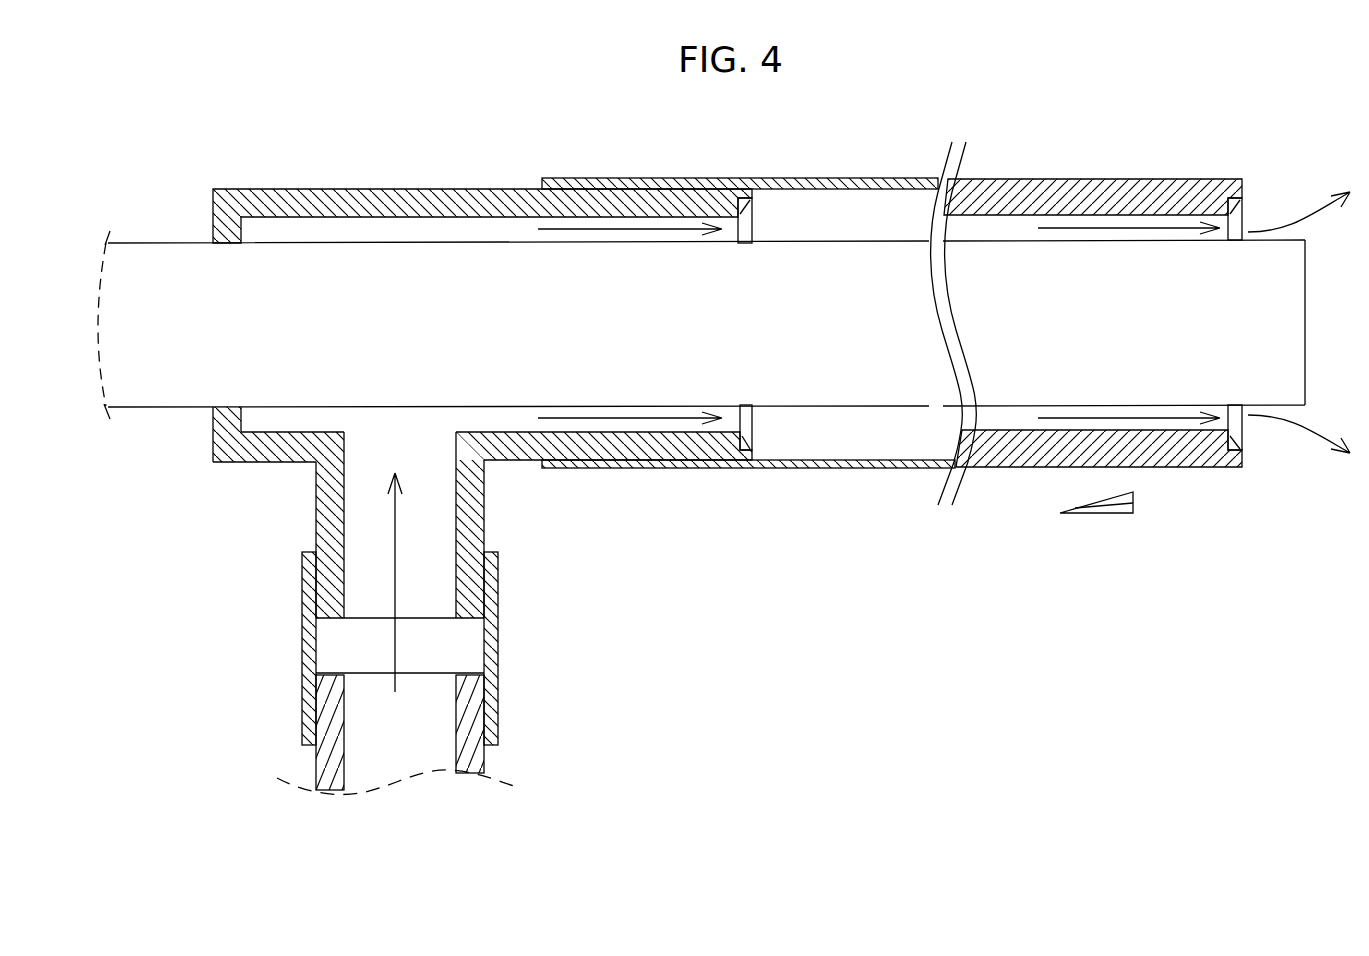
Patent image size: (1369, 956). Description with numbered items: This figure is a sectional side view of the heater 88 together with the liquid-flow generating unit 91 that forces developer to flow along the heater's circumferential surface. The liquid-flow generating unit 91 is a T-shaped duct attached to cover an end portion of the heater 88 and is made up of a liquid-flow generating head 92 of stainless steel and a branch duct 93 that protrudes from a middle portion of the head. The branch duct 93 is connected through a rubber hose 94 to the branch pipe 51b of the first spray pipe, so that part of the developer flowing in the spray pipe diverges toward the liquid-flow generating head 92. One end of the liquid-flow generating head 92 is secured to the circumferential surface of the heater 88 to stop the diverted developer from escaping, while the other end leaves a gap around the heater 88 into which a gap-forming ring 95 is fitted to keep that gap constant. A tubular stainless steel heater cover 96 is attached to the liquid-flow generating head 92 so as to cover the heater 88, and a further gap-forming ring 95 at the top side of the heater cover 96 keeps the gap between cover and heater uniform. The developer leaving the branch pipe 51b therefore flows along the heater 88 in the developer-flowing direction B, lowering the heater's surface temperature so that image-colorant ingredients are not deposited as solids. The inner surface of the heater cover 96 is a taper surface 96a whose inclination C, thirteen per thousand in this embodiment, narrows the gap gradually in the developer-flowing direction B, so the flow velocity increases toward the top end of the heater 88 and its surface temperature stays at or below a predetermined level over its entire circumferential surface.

The heater 88 is at (150, 262).
The liquid-flow generating unit 91 is at (335, 178).
The liquid-flow generating head 92 is at (492, 189).
The branch duct 93 is at (468, 509).
The rubber hose 94 is at (490, 631).
The gap-forming ring 95 is at (752, 210).
The heater cover 96 is at (1108, 192).
The taper surface 96a is at (872, 456).
The branch pipe 51b is at (466, 773).
The developer-flowing direction B is at (614, 236).
The inclination C is at (1133, 505).